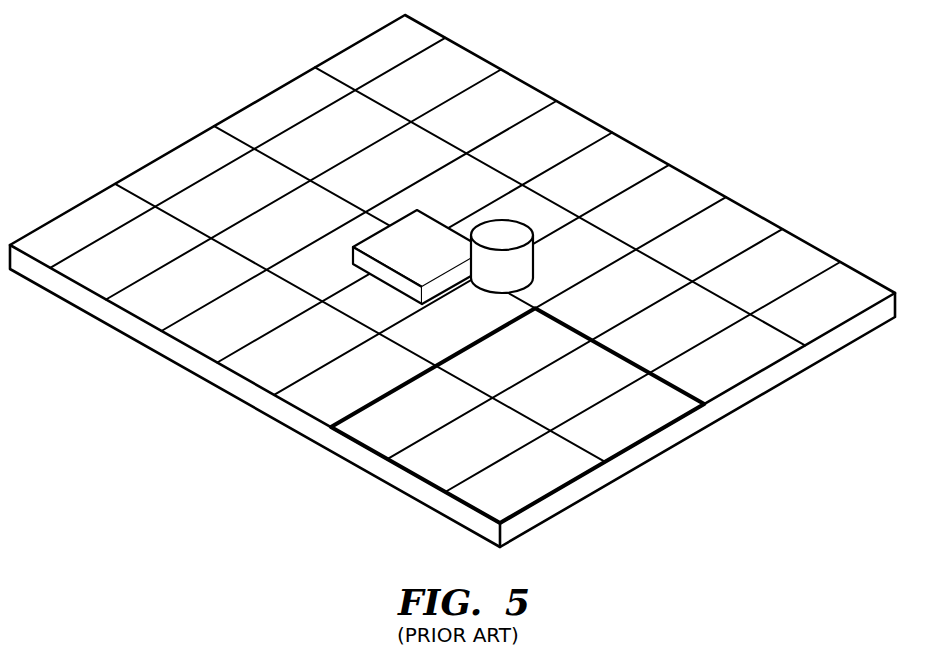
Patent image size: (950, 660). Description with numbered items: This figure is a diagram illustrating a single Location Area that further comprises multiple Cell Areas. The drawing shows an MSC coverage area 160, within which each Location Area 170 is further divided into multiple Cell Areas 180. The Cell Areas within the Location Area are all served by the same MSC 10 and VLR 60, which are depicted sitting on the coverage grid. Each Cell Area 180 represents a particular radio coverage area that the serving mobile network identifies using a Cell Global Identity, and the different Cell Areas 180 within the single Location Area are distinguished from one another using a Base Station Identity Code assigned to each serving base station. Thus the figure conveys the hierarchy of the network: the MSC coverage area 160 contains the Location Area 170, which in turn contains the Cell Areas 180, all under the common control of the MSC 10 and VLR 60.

The MSC 10 is at (440, 233).
The VLR 60 is at (503, 223).
The MSC coverage area 160 is at (638, 148).
The Location Area 170 is at (452, 281).
The Cell Area 180 is at (547, 330).